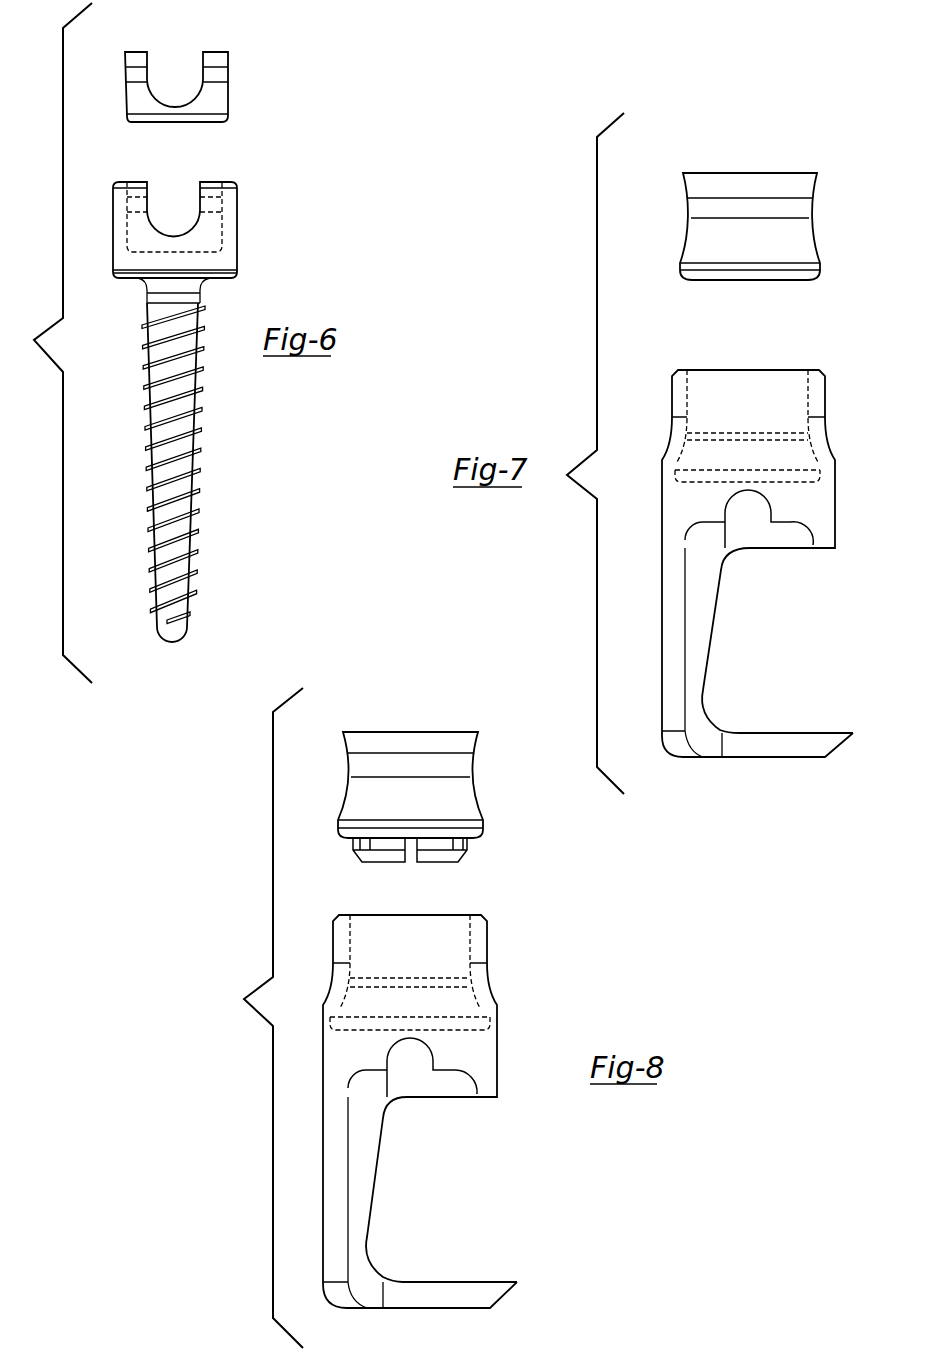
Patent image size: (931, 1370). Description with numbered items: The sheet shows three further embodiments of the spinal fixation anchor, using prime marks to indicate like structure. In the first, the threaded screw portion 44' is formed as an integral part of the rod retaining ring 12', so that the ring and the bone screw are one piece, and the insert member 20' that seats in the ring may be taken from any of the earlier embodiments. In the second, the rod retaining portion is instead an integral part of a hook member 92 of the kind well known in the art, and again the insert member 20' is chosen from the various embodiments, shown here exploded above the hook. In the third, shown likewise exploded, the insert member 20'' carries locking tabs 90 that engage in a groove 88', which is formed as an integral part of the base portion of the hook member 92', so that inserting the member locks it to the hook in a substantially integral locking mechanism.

In FIG. 6, the insert member 20' is at (238, 87).
In FIG. 7, the insert member 20' is at (786, 226).
In FIG. 6, the rod retaining ring 12' is at (233, 242).
In FIG. 7, the rod retaining ring 12' is at (776, 556).
In FIG. 6, the threaded screw portion 44' is at (242, 472).
In FIG. 7, the hook member 92 is at (702, 615).
In FIG. 8, the insert member 20'' is at (447, 785).
In FIG. 8, the locking pads 90 is at (440, 863).
In FIG. 8, the groove 88' is at (461, 1111).
In FIG. 8, the hook member 92' is at (426, 1189).